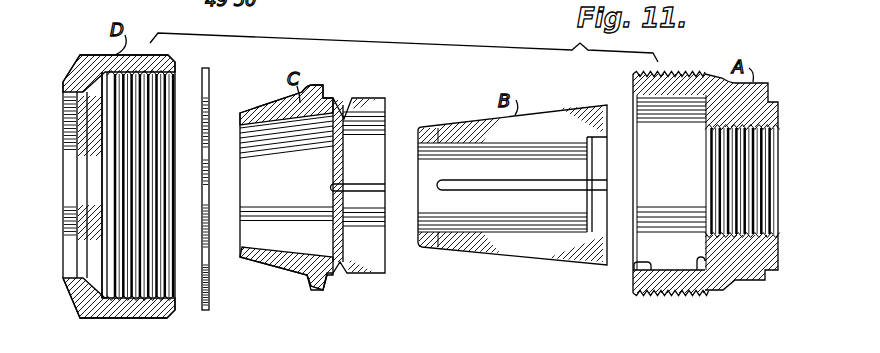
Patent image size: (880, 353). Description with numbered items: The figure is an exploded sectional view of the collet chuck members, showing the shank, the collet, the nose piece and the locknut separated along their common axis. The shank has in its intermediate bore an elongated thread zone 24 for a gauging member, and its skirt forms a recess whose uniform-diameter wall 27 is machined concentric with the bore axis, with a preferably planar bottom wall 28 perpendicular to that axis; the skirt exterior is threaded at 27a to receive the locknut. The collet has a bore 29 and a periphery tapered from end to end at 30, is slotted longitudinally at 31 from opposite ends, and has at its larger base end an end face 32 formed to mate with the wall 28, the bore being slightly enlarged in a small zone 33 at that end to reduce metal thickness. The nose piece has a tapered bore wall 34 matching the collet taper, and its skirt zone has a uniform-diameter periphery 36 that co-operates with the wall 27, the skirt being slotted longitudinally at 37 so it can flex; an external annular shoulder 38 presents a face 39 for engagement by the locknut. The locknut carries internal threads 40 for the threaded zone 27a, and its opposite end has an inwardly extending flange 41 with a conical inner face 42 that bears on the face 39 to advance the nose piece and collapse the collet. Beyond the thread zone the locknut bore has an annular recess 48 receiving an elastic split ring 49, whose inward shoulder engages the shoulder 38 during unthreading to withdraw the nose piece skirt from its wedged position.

The elongated thread zone 24 is at (772, 222).
The wall 27 is at (633, 270).
The threaded exterior of skirt zone 27a is at (652, 298).
The annular wall 28 is at (698, 258).
The bore 29 is at (432, 205).
The tapered face 30 is at (512, 258).
The slots 31 is at (545, 215).
The end face 32 is at (607, 245).
The increased bore diameter zone 33 is at (602, 198).
The tapered bore wall 34 is at (272, 250).
The skirt periphery 36 is at (366, 273).
The slots 37 is at (378, 188).
The external annular shoulder 38 is at (318, 286).
The face 39 is at (310, 285).
The internal threads 40 is at (160, 197).
The inwardly extending flange 41 is at (80, 295).
The conical inner face 42 is at (82, 277).
The annular recess 48 is at (105, 300).
The split ring 49 is at (203, 110).